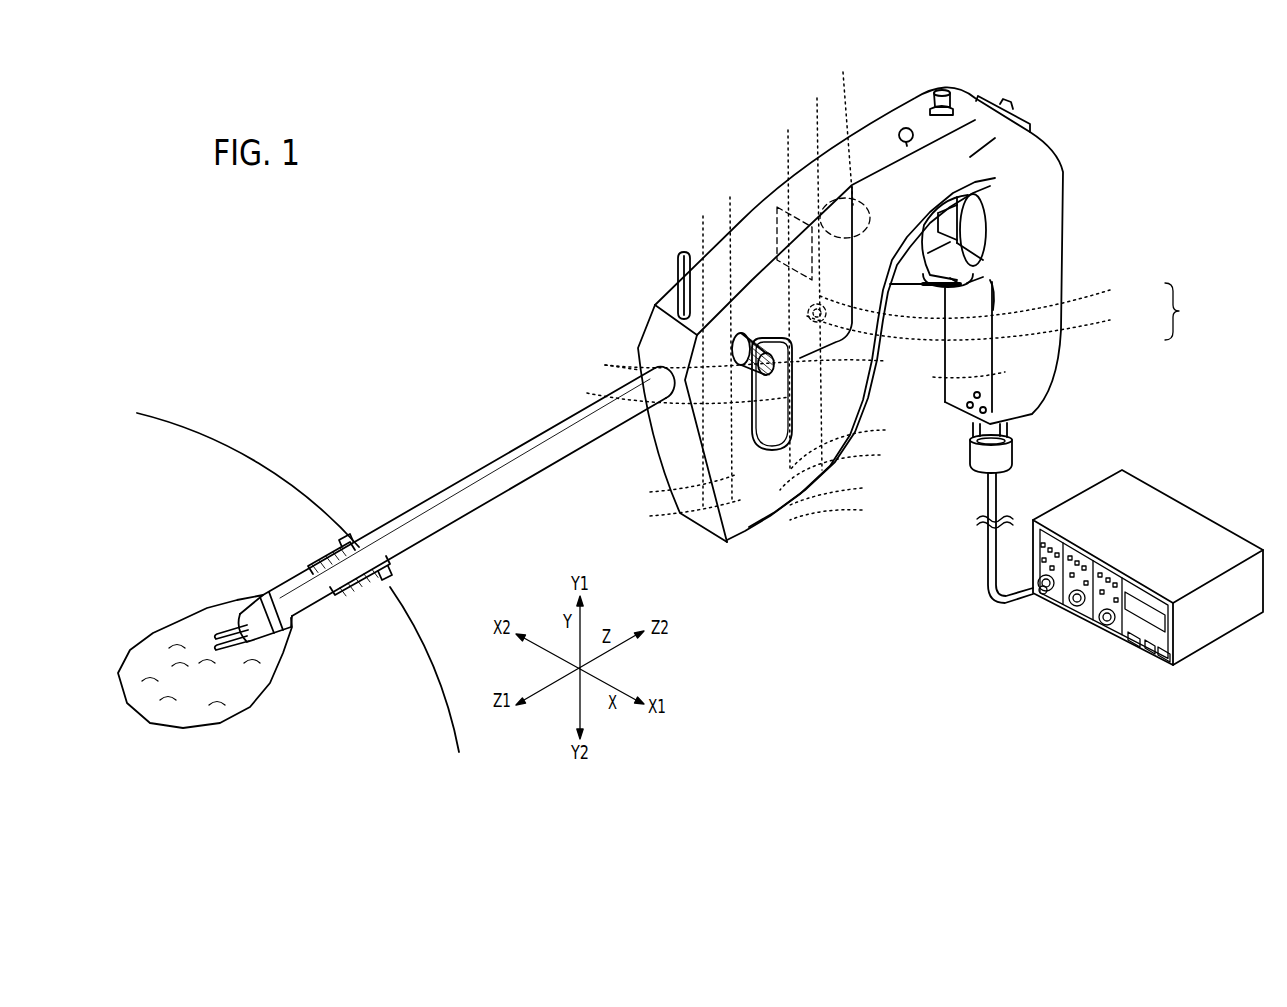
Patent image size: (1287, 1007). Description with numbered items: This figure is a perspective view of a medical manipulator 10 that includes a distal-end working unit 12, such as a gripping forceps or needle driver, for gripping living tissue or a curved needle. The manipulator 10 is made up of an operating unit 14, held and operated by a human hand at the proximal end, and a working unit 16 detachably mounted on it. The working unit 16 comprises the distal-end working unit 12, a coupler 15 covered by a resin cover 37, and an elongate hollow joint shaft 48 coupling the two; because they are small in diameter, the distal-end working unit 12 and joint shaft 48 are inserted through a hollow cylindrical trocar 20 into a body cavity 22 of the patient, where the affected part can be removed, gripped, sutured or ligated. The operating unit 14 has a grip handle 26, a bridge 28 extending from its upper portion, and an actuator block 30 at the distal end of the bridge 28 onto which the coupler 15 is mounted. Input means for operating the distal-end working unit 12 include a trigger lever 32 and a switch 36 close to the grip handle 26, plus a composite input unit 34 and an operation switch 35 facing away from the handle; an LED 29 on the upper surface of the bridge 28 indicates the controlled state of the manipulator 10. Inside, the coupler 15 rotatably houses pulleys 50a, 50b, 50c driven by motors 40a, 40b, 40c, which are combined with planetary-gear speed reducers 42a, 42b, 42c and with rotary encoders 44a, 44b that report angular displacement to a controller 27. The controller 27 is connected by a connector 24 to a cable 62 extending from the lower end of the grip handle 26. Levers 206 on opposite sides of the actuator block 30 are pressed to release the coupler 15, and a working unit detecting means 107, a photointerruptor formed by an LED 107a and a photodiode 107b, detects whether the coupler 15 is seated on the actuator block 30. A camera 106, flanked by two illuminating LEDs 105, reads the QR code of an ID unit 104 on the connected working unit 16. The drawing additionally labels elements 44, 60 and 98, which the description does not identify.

The medical manipulator 10 is at (288, 215).
The distal-end working unit 12 is at (239, 584).
The operating unit 14 is at (1010, 91).
The coupler 15 is at (652, 332).
The working unit 16 is at (553, 342).
The trocar 20 is at (392, 574).
The body cavity 22 is at (160, 643).
The connector 24 is at (1040, 589).
The grip handle 26 is at (1052, 348).
The controller 27 is at (1157, 493).
The bridge 28 is at (862, 139).
The LED 29 is at (905, 128).
The actuator block 30 is at (677, 450).
The trigger lever 32 is at (975, 222).
The composite input unit 34 is at (1024, 118).
The operation switch 35 is at (944, 88).
The switch 36 is at (1000, 290).
The resin cover 37 is at (759, 213).
The motor 40a is at (855, 443).
The motor 40b is at (843, 491).
The motor 40c is at (675, 490).
The speed reducer 42a is at (986, 372).
The speed reducer 42b is at (670, 392).
The speed reducer 42c is at (605, 365).
The hole 44 is at (680, 514).
The rotary encoder 44a is at (850, 466).
The rotary encoder 44b is at (843, 510).
The joint shaft 48 is at (467, 488).
The pulley 50a is at (763, 362).
The pulley 50b is at (730, 336).
The pulley 50c is at (703, 351).
The treatment section 60 is at (219, 626).
The cable 62 is at (999, 491).
The housing curve 98 is at (962, 189).
The ID unit 104 is at (792, 287).
The LED 105 is at (845, 142).
The camera 106 is at (818, 272).
The working unit detecting means 107 is at (1187, 311).
The LED 107a is at (989, 301).
The photodiode 107b is at (982, 326).
The lever 206 is at (783, 407).